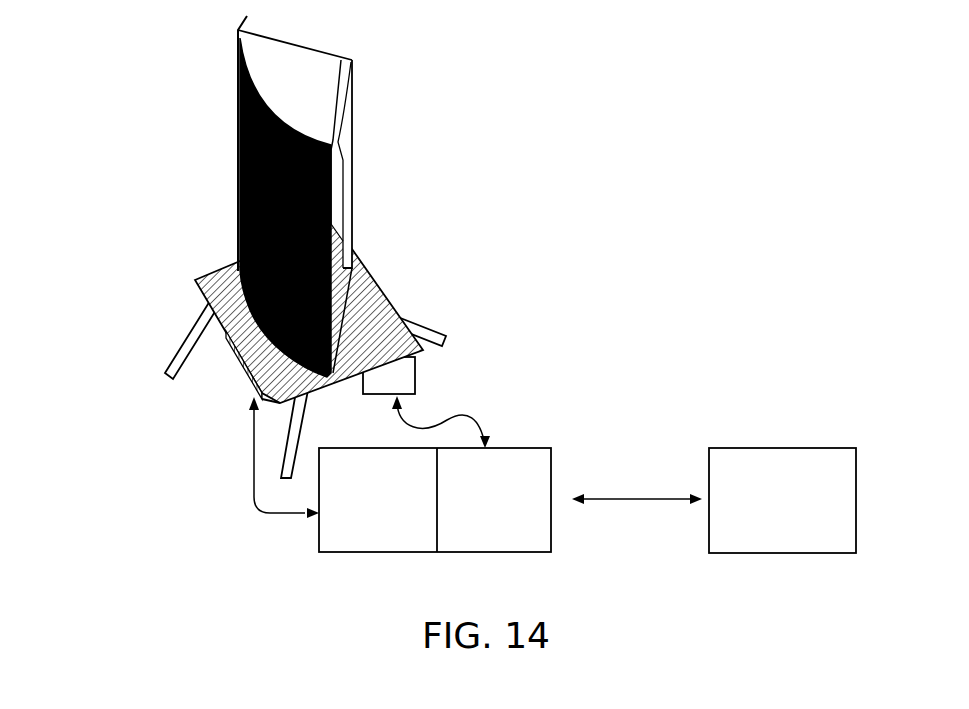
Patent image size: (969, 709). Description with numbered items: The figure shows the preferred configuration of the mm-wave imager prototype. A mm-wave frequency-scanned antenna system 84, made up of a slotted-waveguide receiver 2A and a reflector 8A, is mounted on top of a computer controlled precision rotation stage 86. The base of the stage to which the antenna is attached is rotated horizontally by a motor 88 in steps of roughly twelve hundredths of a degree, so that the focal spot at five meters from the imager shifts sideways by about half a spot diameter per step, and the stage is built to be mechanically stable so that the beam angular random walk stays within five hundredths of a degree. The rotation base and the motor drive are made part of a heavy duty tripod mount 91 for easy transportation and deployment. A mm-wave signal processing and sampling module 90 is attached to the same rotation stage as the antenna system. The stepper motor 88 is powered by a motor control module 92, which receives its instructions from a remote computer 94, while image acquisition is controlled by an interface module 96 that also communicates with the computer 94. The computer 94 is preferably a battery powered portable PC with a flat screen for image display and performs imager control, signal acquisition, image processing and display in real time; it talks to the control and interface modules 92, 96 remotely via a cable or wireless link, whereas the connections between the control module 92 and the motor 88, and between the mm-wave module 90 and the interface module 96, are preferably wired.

The mm-wave frequency-scanned antenna system 84 is at (290, 247).
The reflector 8A is at (268, 168).
The slotted-waveguide receiver 2A is at (350, 167).
The precision rotation stage 86 is at (130, 343).
The heavy duty tripod mount 91 is at (432, 326).
The mm-wave signal processing and sampling module 90 is at (250, 372).
The motor 88 is at (415, 376).
The motor control module 92 is at (503, 460).
The computer 94 is at (772, 448).
The interface module 96 is at (385, 545).